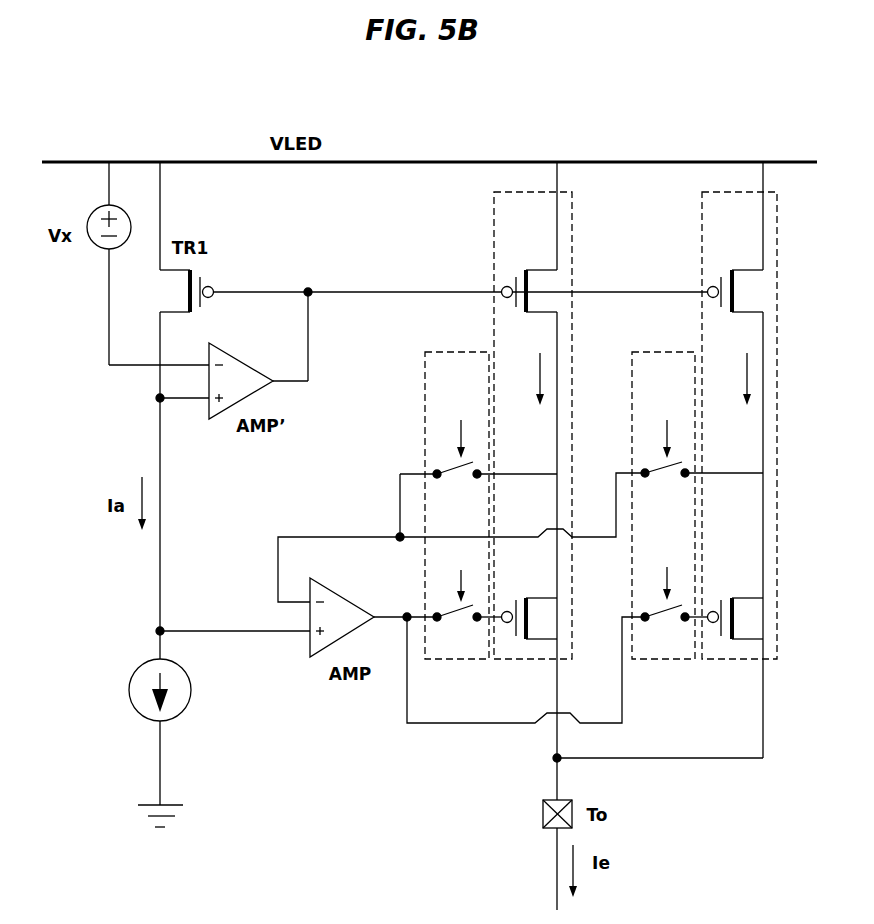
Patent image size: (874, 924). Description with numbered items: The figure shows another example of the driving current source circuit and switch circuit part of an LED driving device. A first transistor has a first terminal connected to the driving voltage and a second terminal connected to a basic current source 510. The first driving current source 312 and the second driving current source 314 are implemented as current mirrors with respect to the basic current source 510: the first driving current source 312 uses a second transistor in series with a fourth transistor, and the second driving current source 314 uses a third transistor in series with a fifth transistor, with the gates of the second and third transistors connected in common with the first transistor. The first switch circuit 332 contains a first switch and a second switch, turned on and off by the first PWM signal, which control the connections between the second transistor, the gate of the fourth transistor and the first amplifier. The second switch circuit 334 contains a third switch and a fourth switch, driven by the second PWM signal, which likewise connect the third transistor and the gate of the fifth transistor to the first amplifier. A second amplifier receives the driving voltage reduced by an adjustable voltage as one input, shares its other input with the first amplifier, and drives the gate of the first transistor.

The first driving current source 312 is at (544, 192).
The second driving current source 314 is at (742, 192).
The first switch circuit 332 is at (463, 350).
The second switch circuit 334 is at (670, 350).
The basic current source 510 is at (187, 708).